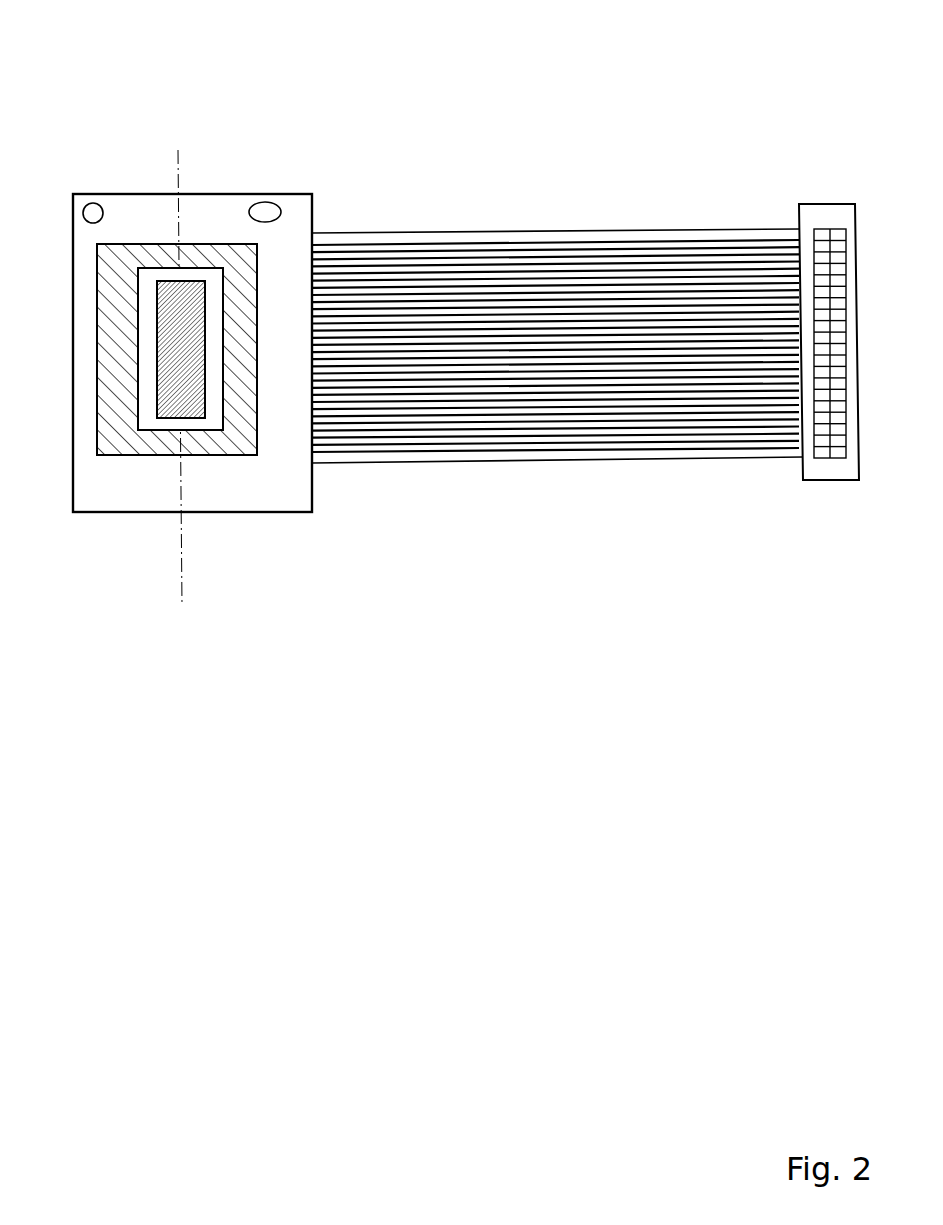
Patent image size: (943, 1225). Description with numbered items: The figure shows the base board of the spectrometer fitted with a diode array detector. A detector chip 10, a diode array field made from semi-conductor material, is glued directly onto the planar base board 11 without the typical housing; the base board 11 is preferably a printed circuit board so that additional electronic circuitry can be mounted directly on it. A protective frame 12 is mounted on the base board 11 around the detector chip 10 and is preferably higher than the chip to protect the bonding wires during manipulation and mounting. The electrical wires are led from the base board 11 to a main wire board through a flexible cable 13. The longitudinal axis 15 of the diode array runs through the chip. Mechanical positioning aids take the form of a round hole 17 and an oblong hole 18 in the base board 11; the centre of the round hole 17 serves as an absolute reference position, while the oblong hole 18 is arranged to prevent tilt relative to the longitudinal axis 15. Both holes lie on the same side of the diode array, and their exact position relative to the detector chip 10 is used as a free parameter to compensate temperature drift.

The detector chip 10 is at (198, 392).
The base board 11 is at (200, 498).
The protective frame 12 is at (108, 454).
The flexible cable 13 is at (543, 453).
The longitudinal axis 15 is at (186, 339).
The round hole 17 is at (105, 213).
The oblong hole 18 is at (263, 202).